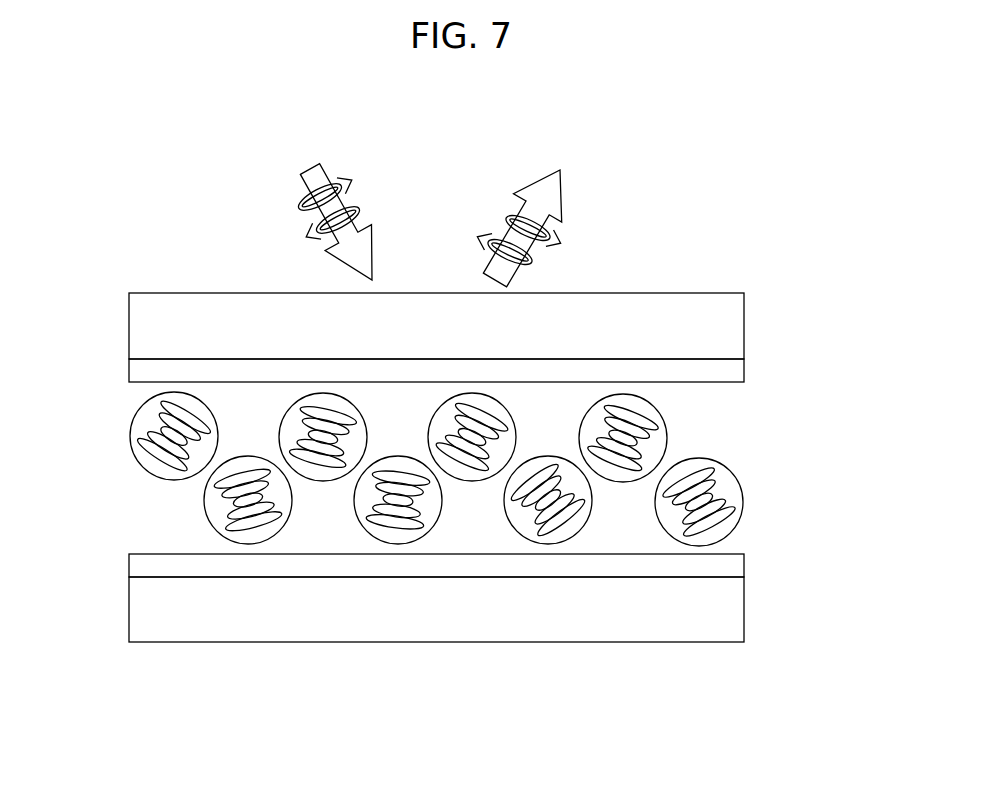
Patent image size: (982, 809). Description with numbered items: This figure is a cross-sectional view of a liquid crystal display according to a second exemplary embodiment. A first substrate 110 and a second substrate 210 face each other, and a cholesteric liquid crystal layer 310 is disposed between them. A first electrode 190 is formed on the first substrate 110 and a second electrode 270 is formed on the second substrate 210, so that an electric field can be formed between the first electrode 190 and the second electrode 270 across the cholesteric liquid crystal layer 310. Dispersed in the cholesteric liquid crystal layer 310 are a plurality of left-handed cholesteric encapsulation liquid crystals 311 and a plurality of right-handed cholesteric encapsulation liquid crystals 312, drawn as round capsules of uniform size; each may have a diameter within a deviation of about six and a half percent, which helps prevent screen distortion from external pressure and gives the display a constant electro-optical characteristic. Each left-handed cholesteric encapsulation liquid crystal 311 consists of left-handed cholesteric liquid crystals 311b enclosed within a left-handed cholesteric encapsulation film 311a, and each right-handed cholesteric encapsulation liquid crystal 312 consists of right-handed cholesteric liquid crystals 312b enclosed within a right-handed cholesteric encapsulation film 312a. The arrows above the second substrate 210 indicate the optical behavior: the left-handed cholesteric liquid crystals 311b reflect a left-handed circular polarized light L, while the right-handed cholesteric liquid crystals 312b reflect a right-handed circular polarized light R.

The first substrate 110 is at (140, 610).
The first electrode 190 is at (140, 564).
The second substrate 210 is at (140, 322).
The second electrode 270 is at (140, 370).
The cholesteric liquid crystal layer 310 is at (452, 566).
The left-handed cholesteric encapsulation liquid crystal 311 is at (715, 435).
The left-handed cholesteric encapsulation film 311a is at (660, 407).
The left-handed cholesteric liquid crystal 311b is at (652, 427).
The right-handed cholesteric encapsulation liquid crystal 312 is at (678, 601).
The right-handed cholesteric encapsulation film 312a is at (707, 545).
The right-handed cholesteric liquid crystal 312b is at (693, 533).
The right-handed circular polarized light R is at (557, 240).
The left-handed circular polarized light L is at (533, 265).